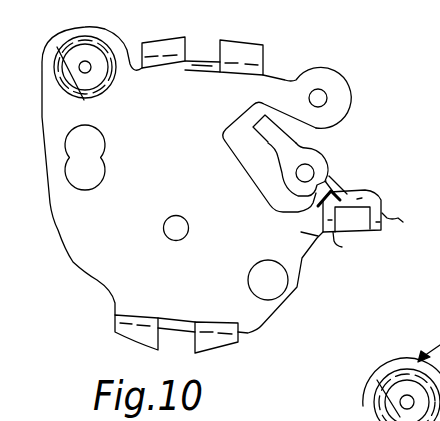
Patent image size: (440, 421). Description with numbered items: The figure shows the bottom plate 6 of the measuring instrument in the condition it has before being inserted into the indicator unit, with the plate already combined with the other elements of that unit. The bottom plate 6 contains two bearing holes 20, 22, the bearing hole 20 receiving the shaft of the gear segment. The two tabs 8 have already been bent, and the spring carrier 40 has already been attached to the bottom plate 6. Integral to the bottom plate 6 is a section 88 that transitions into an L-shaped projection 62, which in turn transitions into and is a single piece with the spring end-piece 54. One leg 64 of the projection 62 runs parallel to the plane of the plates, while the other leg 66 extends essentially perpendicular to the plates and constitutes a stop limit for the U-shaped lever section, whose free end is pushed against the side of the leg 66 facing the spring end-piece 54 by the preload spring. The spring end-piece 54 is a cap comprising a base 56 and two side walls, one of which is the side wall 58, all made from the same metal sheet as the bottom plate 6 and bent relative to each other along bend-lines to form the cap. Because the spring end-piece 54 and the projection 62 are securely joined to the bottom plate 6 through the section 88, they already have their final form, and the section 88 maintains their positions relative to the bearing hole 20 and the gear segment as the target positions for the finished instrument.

The bottom plate 6 is at (88, 247).
The tabs 8 is at (188, 58).
The bearing hole 20 is at (322, 90).
The bearing hole 22 is at (169, 239).
The spring carrier 40 is at (99, 25).
The spring end-piece 54 is at (368, 232).
The base 56 is at (345, 200).
The side wall 58 is at (350, 250).
The L-shaped projection 62 is at (310, 141).
The leg 64 is at (269, 157).
The leg 66 is at (245, 132).
The section 88 is at (313, 240).